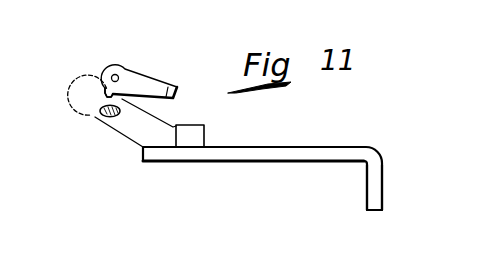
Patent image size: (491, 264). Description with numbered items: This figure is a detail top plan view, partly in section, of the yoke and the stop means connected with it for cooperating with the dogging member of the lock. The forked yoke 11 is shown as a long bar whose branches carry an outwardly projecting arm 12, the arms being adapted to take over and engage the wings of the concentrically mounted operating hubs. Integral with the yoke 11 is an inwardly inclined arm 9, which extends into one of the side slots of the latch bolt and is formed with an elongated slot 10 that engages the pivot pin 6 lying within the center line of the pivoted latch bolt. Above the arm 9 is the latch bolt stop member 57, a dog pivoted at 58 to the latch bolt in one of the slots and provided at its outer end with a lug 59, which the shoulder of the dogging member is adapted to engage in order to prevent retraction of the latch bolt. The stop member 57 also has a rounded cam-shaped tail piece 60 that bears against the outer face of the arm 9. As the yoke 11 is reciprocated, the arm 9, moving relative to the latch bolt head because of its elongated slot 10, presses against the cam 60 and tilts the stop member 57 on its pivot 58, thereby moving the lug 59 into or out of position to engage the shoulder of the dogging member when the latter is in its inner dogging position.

The pivot pin 6 is at (110, 118).
The inwardly inclined arms 9 is at (133, 132).
The elongated slots 10 is at (97, 113).
The forked yoke 11 is at (262, 155).
The outwardly projecting arms 12 is at (377, 179).
The latch bolt stop member 57 is at (140, 80).
The pivot 58 is at (117, 75).
The lug 59 is at (178, 88).
The cam-shaped tail piece 60 is at (104, 88).